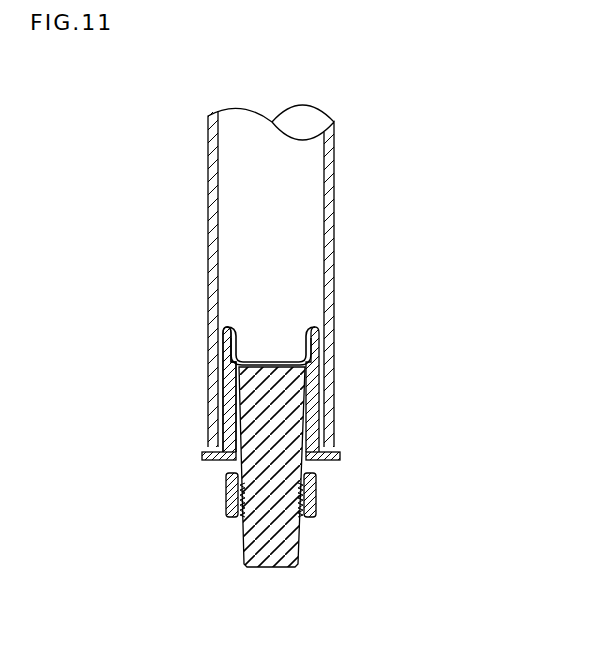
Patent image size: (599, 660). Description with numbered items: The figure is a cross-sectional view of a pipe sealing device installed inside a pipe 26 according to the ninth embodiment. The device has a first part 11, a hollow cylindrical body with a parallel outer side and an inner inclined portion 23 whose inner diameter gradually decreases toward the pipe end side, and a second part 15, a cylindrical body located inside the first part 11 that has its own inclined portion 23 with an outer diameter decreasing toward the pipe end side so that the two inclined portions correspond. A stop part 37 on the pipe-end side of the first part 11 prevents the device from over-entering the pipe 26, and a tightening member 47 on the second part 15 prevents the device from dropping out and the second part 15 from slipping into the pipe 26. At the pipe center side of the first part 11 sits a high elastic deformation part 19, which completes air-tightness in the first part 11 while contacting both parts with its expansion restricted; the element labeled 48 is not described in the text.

The pipe 26 is at (368, 195).
The inclined portion 23 is at (310, 395).
The stop part 37 is at (348, 455).
The high elastic deformation part 19 is at (305, 345).
The second part 15 is at (268, 395).
The first part 11 is at (230, 417).
The tightening member 47 is at (308, 535).
The nut 48 is at (333, 500).